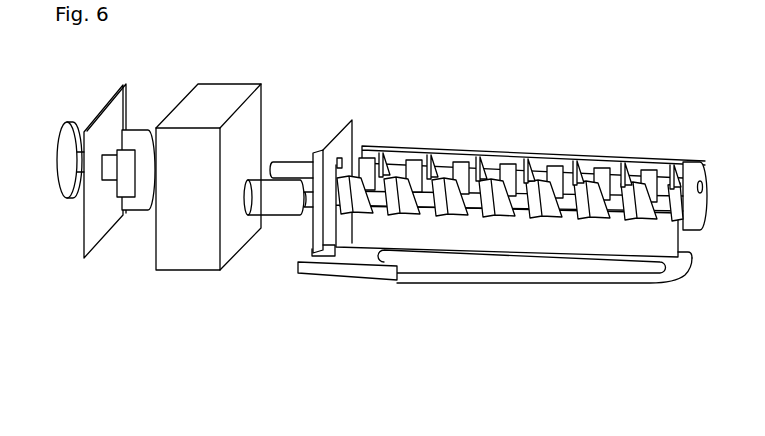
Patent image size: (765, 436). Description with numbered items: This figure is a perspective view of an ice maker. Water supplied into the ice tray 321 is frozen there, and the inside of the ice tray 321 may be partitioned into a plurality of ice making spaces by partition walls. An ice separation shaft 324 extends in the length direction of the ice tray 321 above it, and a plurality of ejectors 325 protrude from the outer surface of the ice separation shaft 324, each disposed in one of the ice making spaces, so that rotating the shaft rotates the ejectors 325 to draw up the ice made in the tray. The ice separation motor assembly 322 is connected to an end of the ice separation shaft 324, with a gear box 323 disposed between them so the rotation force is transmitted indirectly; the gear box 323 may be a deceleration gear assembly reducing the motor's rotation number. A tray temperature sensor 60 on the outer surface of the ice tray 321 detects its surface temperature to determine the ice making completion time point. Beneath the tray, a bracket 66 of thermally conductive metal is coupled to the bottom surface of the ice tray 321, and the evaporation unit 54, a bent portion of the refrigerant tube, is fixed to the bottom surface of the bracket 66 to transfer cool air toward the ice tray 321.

The ice separation motor assembly 322 is at (137, 137).
The gear box 323 is at (223, 93).
The ice separation shaft 324 is at (297, 170).
The ejectors 325 is at (443, 158).
The ice tray 321 is at (508, 162).
The tray temperature sensor 60 is at (293, 198).
The evaporation unit 54 is at (350, 270).
The bracket 66 is at (556, 277).